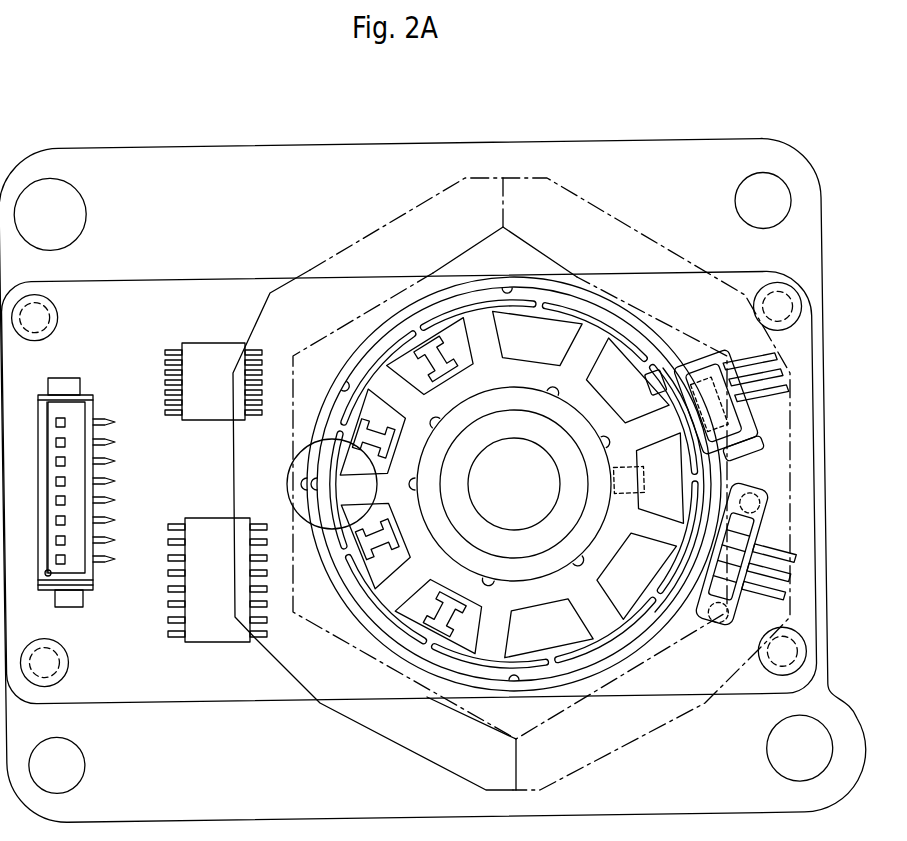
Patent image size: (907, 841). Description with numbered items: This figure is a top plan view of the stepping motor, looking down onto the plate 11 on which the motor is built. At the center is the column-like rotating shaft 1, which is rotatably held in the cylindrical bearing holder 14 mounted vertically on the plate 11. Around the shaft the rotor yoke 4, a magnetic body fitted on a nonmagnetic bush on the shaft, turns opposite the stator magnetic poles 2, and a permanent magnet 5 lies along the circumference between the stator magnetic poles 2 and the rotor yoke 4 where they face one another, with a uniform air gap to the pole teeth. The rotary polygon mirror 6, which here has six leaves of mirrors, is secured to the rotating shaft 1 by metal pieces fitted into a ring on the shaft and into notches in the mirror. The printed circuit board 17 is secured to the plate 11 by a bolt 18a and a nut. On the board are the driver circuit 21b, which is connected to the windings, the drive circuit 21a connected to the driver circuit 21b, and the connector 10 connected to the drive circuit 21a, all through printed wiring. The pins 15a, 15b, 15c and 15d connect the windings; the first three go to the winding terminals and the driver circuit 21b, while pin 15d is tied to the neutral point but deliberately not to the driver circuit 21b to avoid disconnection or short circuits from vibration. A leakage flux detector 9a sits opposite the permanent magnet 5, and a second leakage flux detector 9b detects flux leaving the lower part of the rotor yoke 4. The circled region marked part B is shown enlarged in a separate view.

The rotating shaft 1 is at (523, 510).
The stator magnetic poles 2 is at (600, 345).
The rotor yoke 4 is at (420, 320).
The permanent magnet 5 is at (455, 335).
The rotary polygon mirror 6 is at (580, 224).
The leakage flux detector 9a is at (768, 497).
The leakage flux detector 9b is at (695, 348).
The connector 10 is at (72, 423).
The plate 11 is at (712, 187).
The bearing holder 14 is at (437, 520).
The pin 15a is at (455, 365).
The pin 15b is at (370, 425).
The pin 15c is at (372, 588).
The pin 15d is at (445, 592).
The printed circuit board 17 is at (148, 310).
The bolt 18a is at (52, 303).
The drive circuit 21a is at (205, 368).
The driver circuit 21b is at (208, 627).
The part B is at (283, 479).